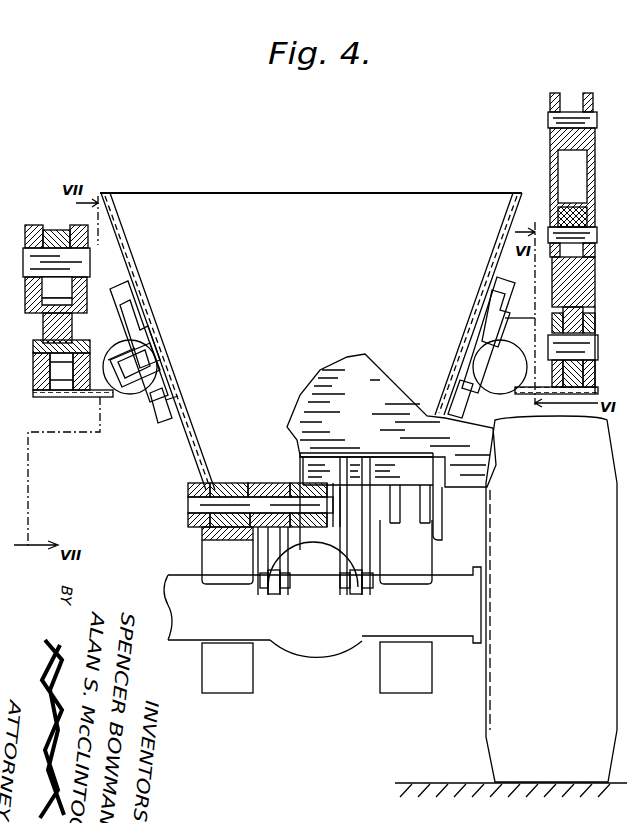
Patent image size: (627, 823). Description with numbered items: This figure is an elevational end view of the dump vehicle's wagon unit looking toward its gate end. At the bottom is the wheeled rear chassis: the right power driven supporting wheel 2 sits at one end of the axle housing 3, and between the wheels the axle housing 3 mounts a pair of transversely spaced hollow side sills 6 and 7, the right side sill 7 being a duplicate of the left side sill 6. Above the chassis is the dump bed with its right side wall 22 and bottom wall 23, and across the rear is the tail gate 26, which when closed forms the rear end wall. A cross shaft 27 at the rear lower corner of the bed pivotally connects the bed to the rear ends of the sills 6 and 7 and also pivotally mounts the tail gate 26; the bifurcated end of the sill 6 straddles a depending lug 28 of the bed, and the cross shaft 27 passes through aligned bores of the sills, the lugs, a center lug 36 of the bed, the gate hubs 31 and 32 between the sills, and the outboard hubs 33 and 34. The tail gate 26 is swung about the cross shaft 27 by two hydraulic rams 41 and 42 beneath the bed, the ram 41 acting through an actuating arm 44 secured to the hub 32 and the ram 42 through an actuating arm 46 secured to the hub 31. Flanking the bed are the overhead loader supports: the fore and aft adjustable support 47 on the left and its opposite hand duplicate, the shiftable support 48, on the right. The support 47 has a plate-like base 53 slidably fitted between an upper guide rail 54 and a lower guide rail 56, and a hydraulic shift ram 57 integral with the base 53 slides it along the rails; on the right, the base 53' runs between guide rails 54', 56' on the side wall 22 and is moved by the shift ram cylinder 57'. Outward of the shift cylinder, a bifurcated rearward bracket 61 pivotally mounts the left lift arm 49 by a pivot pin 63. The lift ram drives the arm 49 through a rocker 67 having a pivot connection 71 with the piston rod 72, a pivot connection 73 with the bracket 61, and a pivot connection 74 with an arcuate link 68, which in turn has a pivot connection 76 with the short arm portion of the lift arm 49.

The right supporting wheel 2 is at (490, 688).
The axle housing 3 is at (290, 660).
The left side sill 6 is at (204, 676).
The right side sill 7 is at (384, 668).
The right side wall 22 is at (490, 243).
The bottom wall 23 is at (266, 482).
The tail gate 26 is at (352, 382).
The cross shaft 27 is at (186, 508).
The depending lug 28 is at (228, 484).
The gate hub 31 is at (368, 530).
The gate hub 32 is at (262, 546).
The outboard hub 33 is at (440, 527).
The outboard hub 34 is at (190, 492).
The center lug 36 is at (314, 538).
The hydraulic ram 41 is at (275, 597).
The gate operating ram 42 is at (357, 588).
The actuating arm 44 is at (262, 588).
The actuating arm 46 is at (345, 580).
The fore and aft adjustable support 47 is at (84, 404).
The fore and aft shiftable support 48 is at (520, 408).
The left lift arm 49 is at (596, 278).
The base 53 is at (150, 334).
The upper guide rail 54 is at (147, 341).
The lower guide rail 56 is at (158, 417).
The hydraulic shift ram 57 is at (131, 383).
The base 53' is at (487, 318).
The upper guide rail 54' is at (480, 327).
The lower guide rail 56' is at (445, 395).
The shift ram cylinder 57' is at (500, 367).
The rearward bracket 61 is at (28, 385).
The pivot pin 63 is at (600, 352).
The rocker 67 is at (36, 230).
The arcuate link 68 is at (550, 150).
The pivot connection 71 is at (86, 262).
The piston rod 72 is at (86, 285).
The pivot connection 73 is at (38, 342).
The pivot connection 74 is at (597, 232).
The pivot connection 76 is at (550, 120).